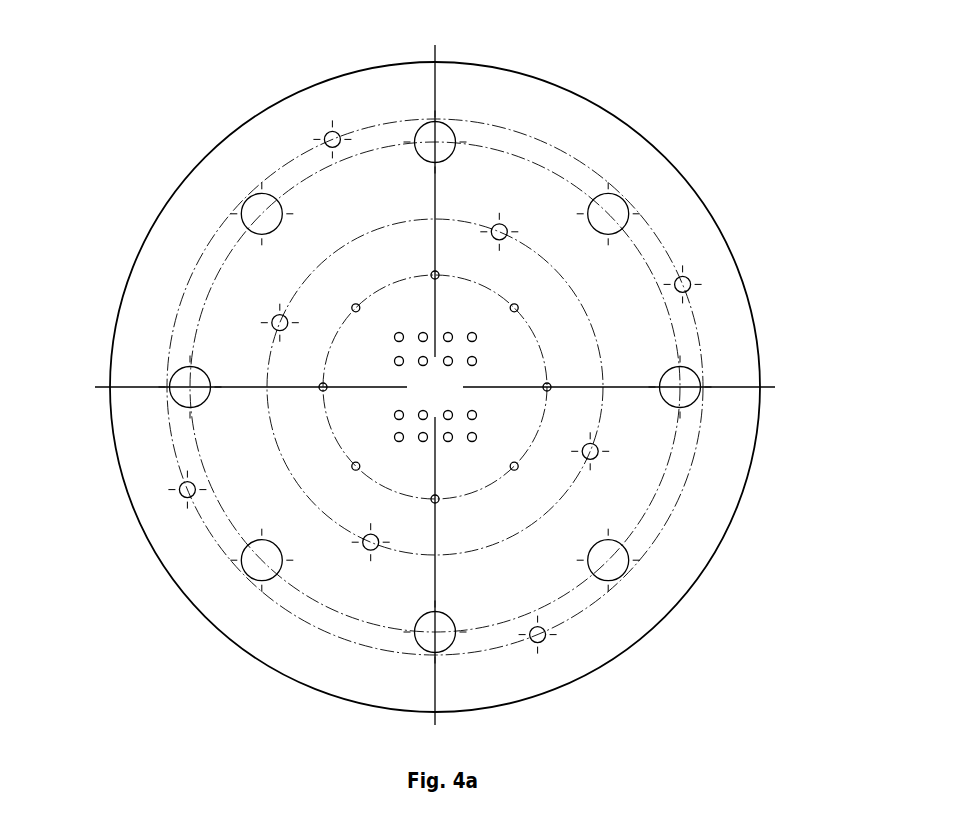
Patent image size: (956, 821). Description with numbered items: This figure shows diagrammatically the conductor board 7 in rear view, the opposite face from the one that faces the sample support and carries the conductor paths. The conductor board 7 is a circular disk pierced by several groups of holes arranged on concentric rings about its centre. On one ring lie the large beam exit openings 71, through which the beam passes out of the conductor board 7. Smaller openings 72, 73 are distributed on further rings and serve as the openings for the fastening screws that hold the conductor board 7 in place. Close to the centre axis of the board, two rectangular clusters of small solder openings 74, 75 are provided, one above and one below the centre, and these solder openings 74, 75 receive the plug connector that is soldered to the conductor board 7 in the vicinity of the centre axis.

The conductor board 7 is at (688, 152).
The beam exit opening in the conductor board 71 is at (443, 137).
The openings for fastening screws of the conductor board 72 is at (596, 452).
The openings for fastening screws of the conductor board 73 is at (327, 137).
The solder openings for plug connector 74 is at (393, 422).
The solder openings for plug connector 75 is at (480, 341).